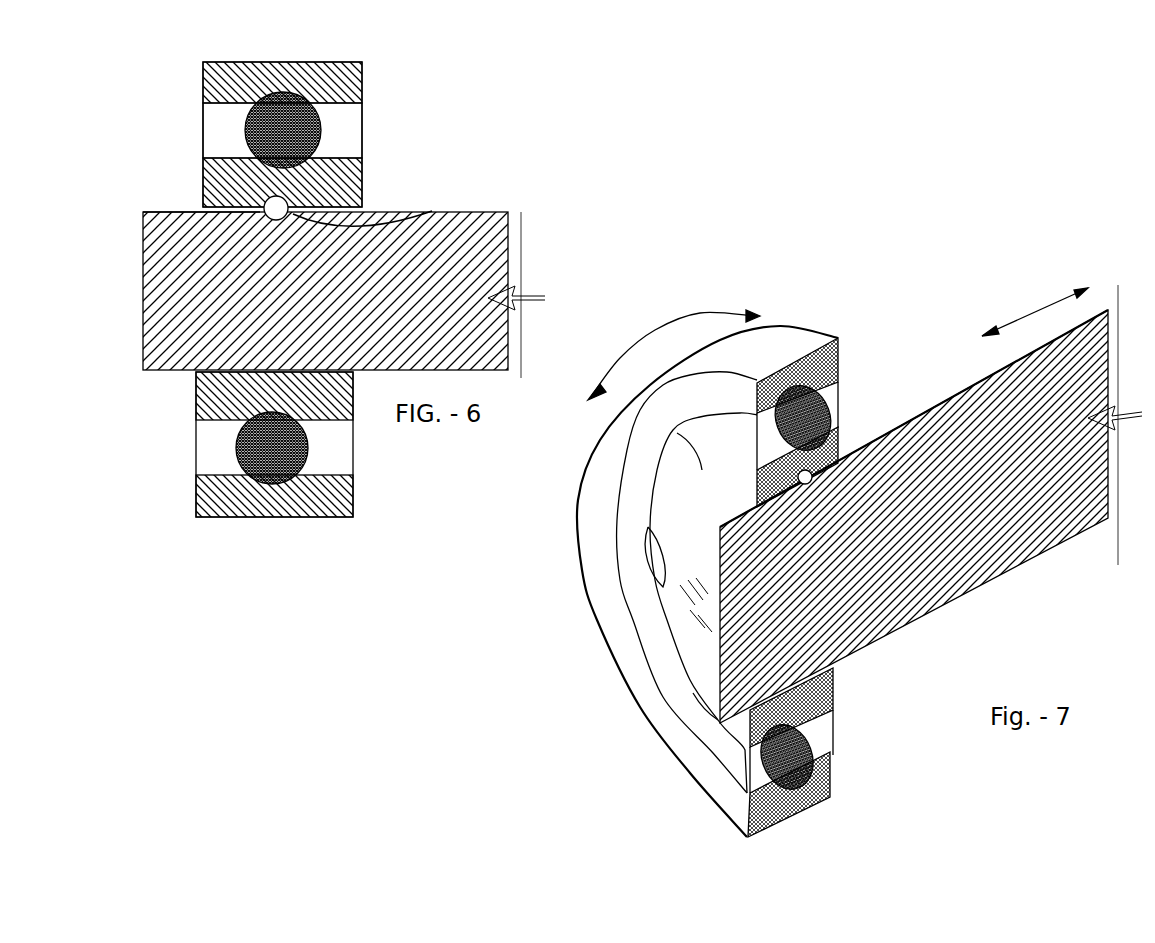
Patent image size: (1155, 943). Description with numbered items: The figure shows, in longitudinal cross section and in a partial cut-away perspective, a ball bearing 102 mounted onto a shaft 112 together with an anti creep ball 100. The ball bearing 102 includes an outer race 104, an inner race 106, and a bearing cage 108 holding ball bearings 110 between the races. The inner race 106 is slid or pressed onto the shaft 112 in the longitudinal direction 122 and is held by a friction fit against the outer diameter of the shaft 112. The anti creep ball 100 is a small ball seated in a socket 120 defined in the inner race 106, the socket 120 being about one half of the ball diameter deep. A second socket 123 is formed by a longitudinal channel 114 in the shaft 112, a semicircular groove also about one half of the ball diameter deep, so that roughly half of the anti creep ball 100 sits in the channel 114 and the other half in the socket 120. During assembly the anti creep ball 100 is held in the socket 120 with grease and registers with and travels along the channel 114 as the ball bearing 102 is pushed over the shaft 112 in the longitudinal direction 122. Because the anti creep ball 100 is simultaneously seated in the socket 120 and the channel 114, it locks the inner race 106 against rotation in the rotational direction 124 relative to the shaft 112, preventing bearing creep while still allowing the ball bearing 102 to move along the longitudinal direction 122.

In FIG. 6, the anti creep ball 100 is at (203, 192).
In FIG. 7, the anti creep ball 100 is at (722, 562).
In FIG. 6, the ball bearing 102 is at (267, 517).
In FIG. 7, the ball bearing 102 is at (833, 790).
In FIG. 6, the outer race 104 is at (365, 62).
In FIG. 7, the outer race 104 is at (835, 338).
In FIG. 6, the inner race 106 is at (362, 182).
In FIG. 7, the inner race 106 is at (845, 432).
In FIG. 6, the bearing cage 108 is at (362, 128).
In FIG. 7, the bearing cage 108 is at (845, 420).
In FIG. 6, the ball bearings 110 is at (362, 116).
In FIG. 7, the ball bearings 110 is at (835, 390).
In FIG. 6, the shaft 112 is at (525, 247).
In FIG. 7, the shaft 112 is at (1015, 550).
In FIG. 6, the longitudinal channel 114 is at (140, 213).
In FIG. 7, the longitudinal channel 114 is at (790, 505).
In FIG. 6, the socket 120 is at (203, 177).
In FIG. 7, the socket 120 is at (765, 468).
In FIG. 7, the longitudinal direction 122 is at (1030, 302).
In FIG. 6, the second socket 123 is at (432, 211).
In FIG. 7, the rotational direction 124 is at (707, 317).